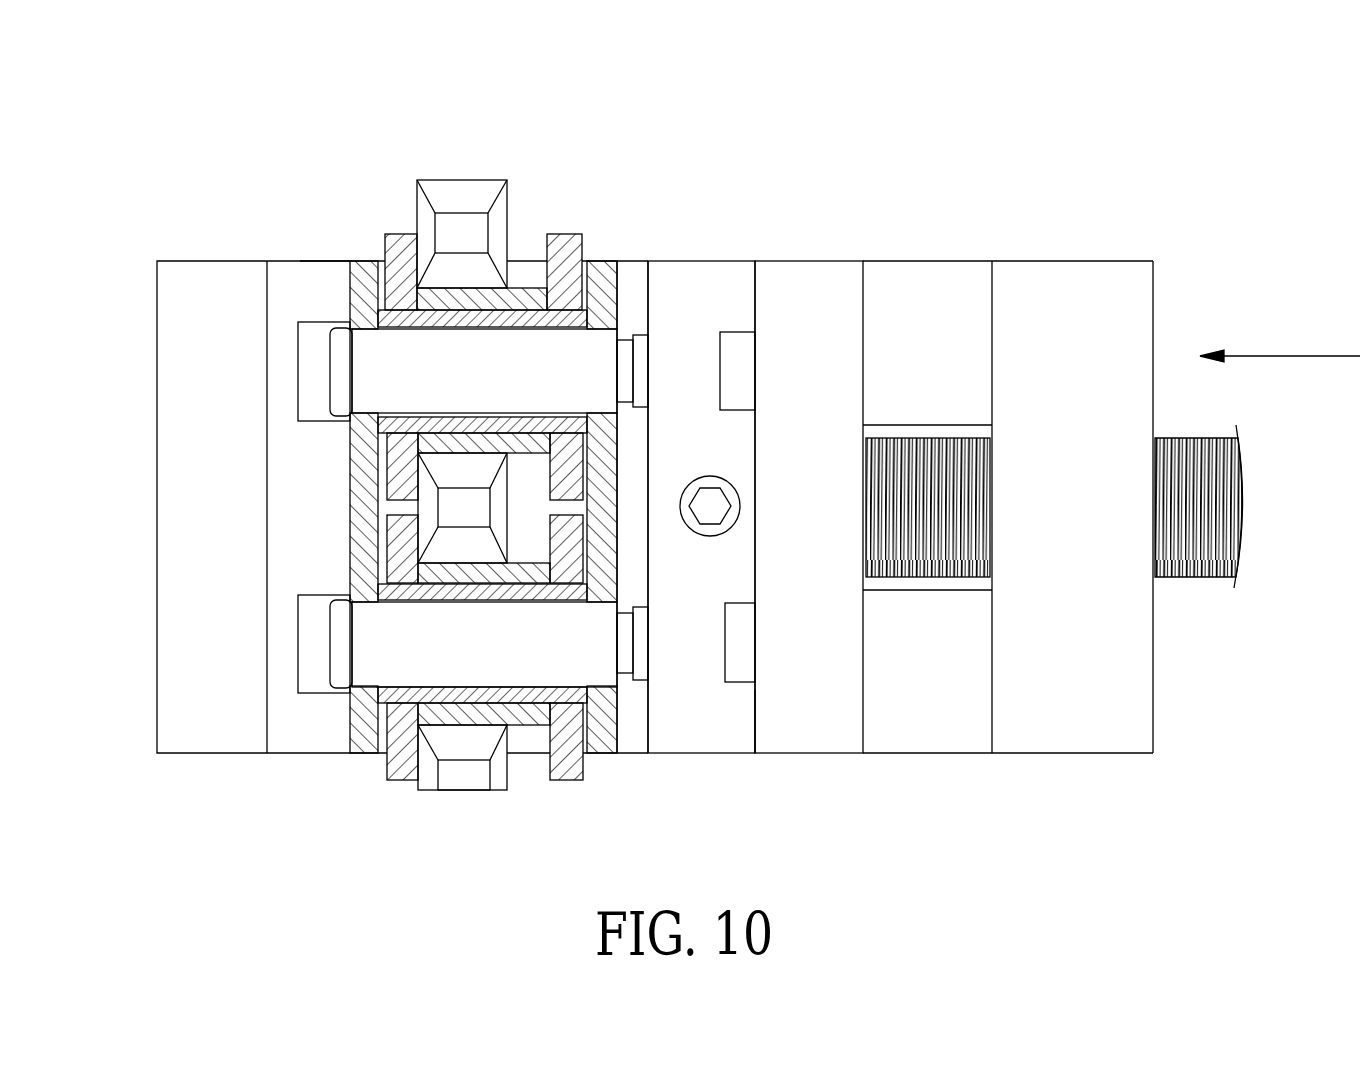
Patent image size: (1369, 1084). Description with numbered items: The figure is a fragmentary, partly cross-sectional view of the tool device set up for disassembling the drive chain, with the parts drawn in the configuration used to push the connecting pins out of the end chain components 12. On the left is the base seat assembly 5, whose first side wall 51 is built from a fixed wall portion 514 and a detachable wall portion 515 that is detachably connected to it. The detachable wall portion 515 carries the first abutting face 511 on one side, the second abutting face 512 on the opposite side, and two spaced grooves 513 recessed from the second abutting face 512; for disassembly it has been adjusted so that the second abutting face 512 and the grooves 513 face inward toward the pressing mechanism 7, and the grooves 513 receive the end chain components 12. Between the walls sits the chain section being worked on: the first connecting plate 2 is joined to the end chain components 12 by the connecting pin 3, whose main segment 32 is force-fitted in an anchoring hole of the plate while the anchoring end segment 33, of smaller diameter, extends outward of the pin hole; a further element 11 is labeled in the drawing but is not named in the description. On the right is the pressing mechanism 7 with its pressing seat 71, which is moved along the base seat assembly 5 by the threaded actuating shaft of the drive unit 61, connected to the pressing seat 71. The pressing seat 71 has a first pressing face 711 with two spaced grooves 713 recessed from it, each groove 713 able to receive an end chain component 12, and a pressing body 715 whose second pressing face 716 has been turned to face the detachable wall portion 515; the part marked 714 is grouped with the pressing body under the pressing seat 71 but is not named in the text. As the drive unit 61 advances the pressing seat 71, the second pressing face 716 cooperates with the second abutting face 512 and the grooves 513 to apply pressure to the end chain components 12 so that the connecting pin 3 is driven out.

The base seat assembly 5 is at (222, 484).
The first side wall 51 is at (272, 440).
The first abutting face 511 is at (268, 705).
The second abutting face 512 is at (337, 262).
The spaced grooves 513 is at (307, 362).
The fixed wall portion 514 is at (216, 290).
The detachable wall portion 515 is at (327, 470).
The sleeve 11 is at (369, 290).
The end chain components 12 is at (405, 210).
The first connecting plate 2 is at (600, 273).
The connecting pin 3 is at (535, 505).
The main segment 32 is at (533, 673).
The anchoring end segment 33 is at (637, 290).
The pressing mechanism 7 is at (912, 487).
The pressing seat 71 is at (796, 487).
The first pressing face 711 is at (755, 718).
The spaced grooves 713 is at (738, 368).
The outer section 714 is at (838, 290).
The pressing body 715 is at (730, 290).
The second pressing face 716 is at (650, 302).
The drive unit 61 is at (1192, 585).